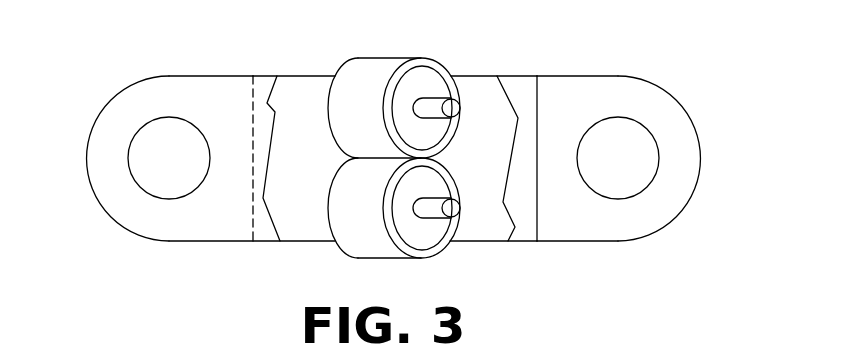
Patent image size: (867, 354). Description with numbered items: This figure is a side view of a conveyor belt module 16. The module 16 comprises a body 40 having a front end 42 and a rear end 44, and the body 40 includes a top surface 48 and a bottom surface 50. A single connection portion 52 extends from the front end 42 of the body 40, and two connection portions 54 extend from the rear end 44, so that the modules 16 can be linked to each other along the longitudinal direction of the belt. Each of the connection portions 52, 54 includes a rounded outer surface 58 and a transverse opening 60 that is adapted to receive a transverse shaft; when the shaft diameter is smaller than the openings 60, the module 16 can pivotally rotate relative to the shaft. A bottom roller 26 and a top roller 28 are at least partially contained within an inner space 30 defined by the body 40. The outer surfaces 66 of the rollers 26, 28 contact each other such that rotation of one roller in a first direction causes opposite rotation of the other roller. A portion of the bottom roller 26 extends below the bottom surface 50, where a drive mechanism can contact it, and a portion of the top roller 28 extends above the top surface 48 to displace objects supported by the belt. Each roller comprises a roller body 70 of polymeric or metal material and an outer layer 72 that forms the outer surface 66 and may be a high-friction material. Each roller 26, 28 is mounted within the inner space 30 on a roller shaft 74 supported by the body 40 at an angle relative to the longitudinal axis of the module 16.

The conveyor belt module 16 is at (682, 74).
The bottom roller 26 is at (342, 184).
The top roller 28 is at (342, 130).
The inner space 30 is at (478, 223).
The body 40 is at (262, 90).
The front end 42 is at (565, 89).
The rear end 44 is at (230, 229).
The top surface 48 is at (512, 73).
The bottom surface 50 is at (552, 243).
The connection portion 52 is at (673, 193).
The connection portions 54 is at (118, 193).
The rounded outer surface 58 is at (113, 102).
The transverse opening 60 is at (157, 160).
The outer surfaces 66 is at (375, 62).
The roller body 70 is at (423, 82).
The outer layer 72 is at (458, 90).
The roller shaft 74 is at (435, 112).